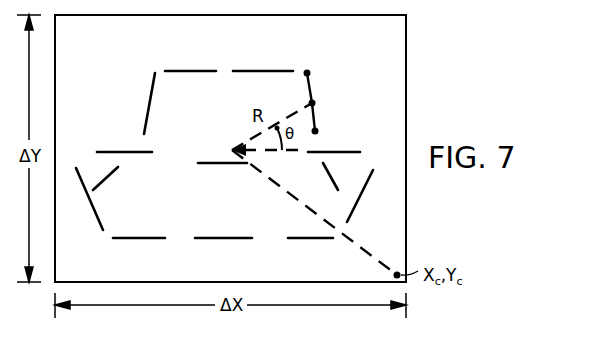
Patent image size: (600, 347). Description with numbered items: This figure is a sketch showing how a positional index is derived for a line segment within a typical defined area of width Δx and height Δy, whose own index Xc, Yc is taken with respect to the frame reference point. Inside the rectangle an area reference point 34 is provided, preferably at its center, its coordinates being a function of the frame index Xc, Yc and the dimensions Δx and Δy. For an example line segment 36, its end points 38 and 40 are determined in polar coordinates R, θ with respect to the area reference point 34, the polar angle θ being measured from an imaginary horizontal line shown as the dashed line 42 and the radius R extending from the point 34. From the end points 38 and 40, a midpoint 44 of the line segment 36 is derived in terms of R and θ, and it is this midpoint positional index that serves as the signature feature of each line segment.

The area reference point 34 is at (231, 148).
The line segment 36 is at (308, 86).
The end point 38 is at (310, 72).
The end point 40 is at (318, 130).
The dashed line 42 is at (290, 152).
The midpoint 44 is at (315, 102).